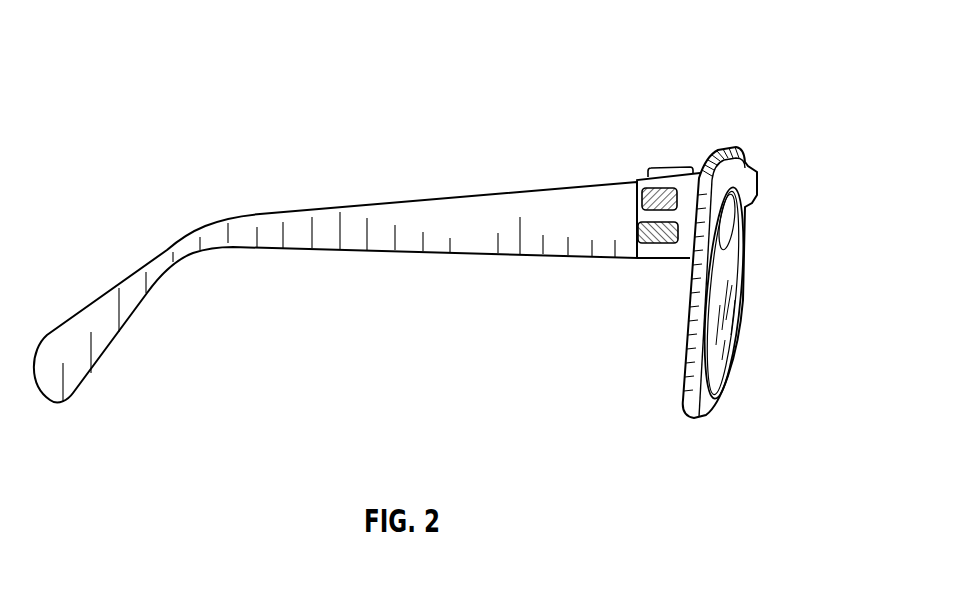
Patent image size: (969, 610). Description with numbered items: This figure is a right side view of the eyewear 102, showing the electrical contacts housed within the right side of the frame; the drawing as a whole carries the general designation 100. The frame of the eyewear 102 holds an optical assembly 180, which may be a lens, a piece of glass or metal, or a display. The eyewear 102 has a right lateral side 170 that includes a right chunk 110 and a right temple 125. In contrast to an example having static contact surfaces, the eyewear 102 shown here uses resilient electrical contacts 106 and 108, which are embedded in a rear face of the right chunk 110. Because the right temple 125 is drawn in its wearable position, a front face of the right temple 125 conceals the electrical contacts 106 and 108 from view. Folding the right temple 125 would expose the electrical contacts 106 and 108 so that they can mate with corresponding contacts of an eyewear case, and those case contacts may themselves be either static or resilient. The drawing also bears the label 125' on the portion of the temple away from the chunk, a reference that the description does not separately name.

The eyewear device 100 is at (198, 73).
The eyewear 102 is at (782, 133).
The electrical contact 106 is at (640, 197).
The electrical contact 108 is at (638, 238).
The right chunk 110 is at (678, 258).
The right temple 125 is at (721, 256).
The temple arm 125' is at (335, 285).
The right lateral side 170 is at (673, 168).
The optical assembly 180 is at (717, 337).